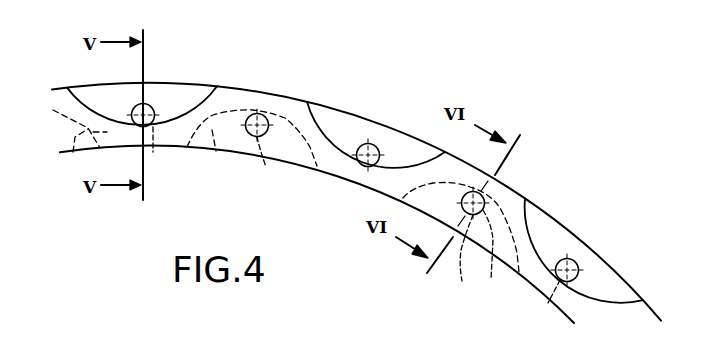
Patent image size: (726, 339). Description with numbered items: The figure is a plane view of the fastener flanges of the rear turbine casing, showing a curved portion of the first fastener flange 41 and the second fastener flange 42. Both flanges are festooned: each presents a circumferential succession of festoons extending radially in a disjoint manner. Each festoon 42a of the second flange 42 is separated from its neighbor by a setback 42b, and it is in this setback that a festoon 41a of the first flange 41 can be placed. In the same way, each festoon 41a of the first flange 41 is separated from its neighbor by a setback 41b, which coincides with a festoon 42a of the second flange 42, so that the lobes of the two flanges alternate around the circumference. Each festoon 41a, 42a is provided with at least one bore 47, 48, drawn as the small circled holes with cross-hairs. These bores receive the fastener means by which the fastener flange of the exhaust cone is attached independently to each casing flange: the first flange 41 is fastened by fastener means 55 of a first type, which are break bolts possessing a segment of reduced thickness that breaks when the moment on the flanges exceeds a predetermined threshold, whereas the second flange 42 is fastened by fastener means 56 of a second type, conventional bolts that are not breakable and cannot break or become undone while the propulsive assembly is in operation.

The first fastener flange 41 is at (72, 152).
The festoon of the first flange 41a is at (186, 102).
The setback of the first flange 41b is at (213, 152).
The second fastener flange 42 is at (355, 183).
The festoon of the second flange 42a is at (250, 98).
The setback of the second flange 42b is at (92, 110).
The bore 47 is at (146, 104).
The bore 48 is at (266, 167).
The break bolt 55 is at (153, 153).
The bolt 56 is at (267, 108).